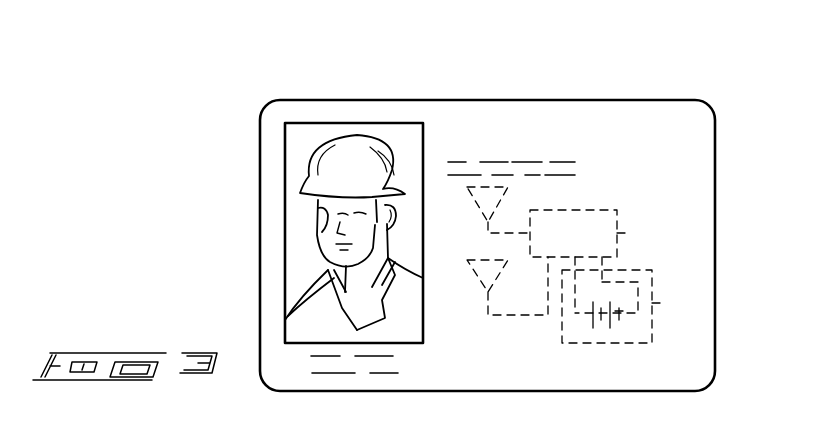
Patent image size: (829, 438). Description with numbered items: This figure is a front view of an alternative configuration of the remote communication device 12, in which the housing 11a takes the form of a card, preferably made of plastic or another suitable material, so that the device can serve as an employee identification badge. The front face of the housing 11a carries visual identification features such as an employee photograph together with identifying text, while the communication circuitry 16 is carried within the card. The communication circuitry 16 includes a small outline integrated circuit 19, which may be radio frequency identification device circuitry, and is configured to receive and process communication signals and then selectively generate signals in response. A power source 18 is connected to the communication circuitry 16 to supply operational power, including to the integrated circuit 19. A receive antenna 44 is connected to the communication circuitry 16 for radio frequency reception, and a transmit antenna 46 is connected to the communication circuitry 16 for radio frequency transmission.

The remote communication device 12 is at (613, 78).
The communication circuitry 16 is at (689, 138).
The housing 11a is at (260, 172).
The receive antenna 44 is at (473, 198).
The transmit antenna 46 is at (473, 275).
The small outline integrated circuit 19 is at (625, 230).
The power source 18 is at (657, 303).